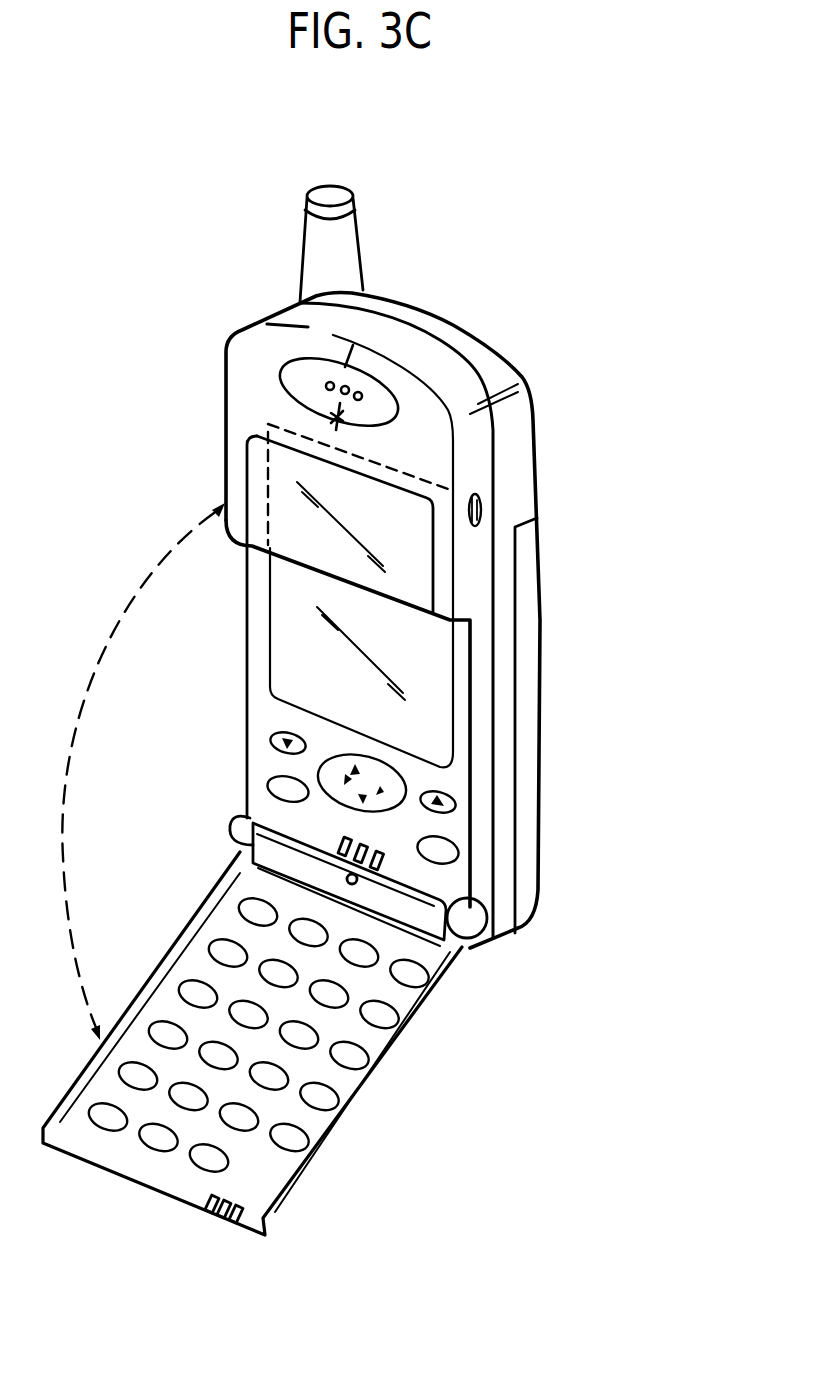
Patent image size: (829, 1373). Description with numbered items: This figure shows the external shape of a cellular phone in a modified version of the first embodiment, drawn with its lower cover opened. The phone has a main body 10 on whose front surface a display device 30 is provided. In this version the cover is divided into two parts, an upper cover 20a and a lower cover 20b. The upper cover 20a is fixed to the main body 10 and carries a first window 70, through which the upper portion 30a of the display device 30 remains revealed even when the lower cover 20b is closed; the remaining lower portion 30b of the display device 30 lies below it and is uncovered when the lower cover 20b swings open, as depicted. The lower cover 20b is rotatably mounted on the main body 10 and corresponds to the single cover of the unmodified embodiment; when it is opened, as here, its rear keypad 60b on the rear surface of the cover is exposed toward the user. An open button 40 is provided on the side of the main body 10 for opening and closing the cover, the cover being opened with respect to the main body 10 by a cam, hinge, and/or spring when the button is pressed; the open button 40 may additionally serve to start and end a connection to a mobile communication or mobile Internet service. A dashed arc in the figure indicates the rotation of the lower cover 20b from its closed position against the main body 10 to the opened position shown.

The main body 10 is at (505, 545).
The upper cover 20a is at (236, 304).
The lower cover 20b is at (263, 1053).
The display device 30 is at (503, 611).
The upper portion of the display device 30a is at (452, 527).
The lower display 30b is at (440, 700).
The open button 40 is at (480, 496).
The rear keypad 60b is at (154, 1159).
The first window 70 is at (247, 478).